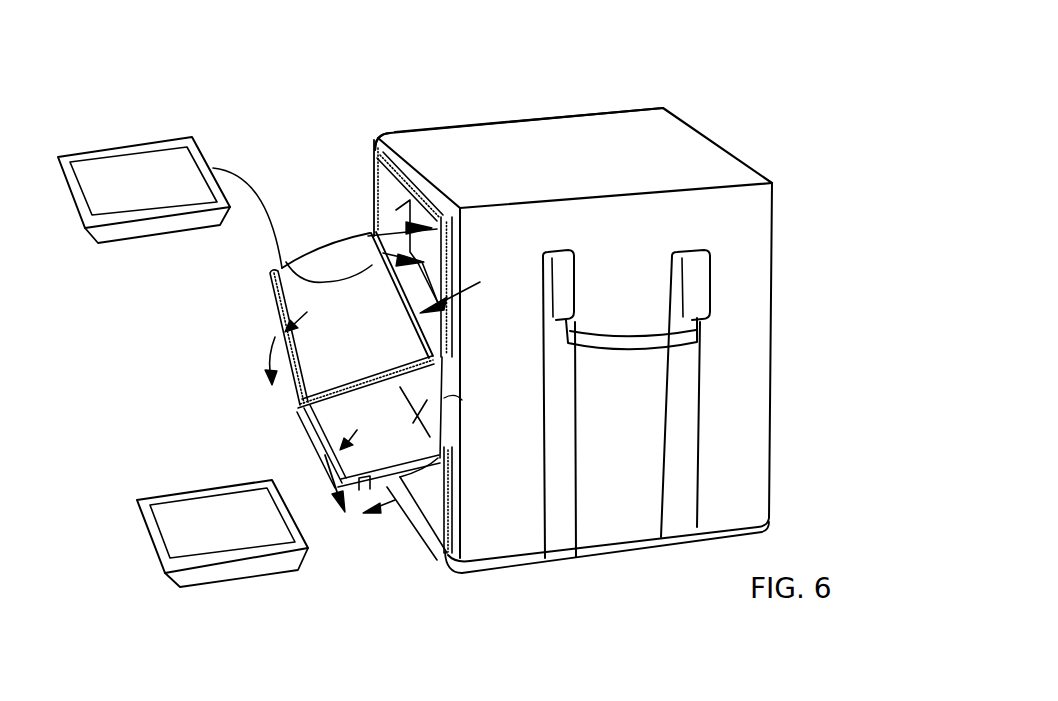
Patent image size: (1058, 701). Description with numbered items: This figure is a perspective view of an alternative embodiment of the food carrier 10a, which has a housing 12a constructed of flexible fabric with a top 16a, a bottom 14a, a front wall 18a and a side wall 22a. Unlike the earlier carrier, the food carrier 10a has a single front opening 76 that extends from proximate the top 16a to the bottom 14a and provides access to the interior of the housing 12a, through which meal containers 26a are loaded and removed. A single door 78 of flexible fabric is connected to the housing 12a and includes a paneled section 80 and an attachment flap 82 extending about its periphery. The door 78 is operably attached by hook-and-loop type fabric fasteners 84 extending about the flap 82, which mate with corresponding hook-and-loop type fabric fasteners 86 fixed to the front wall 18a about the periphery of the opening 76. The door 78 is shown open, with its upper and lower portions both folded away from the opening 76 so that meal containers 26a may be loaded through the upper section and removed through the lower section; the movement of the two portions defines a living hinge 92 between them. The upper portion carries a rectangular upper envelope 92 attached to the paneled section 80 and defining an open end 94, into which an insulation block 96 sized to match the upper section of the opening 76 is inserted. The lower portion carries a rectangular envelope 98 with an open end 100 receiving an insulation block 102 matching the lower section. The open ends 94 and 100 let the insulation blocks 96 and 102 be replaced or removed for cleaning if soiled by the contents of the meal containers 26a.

The food carrier 10a is at (625, 324).
The housing 12a is at (624, 104).
The bottom 14a is at (520, 563).
The top 16a is at (532, 132).
The front wall 18a is at (400, 160).
The side wall 22a is at (743, 372).
The meal container 26a is at (100, 165).
The front opening 76 is at (369, 235).
The door 78 is at (457, 348).
The paneled section 80 is at (463, 390).
The attachment flap 82 is at (294, 402).
The hook-and-loop type fabric fasteners 84 is at (349, 302).
The hook-and-loop type fabric fasteners 86 is at (413, 190).
The upper envelope 92 is at (327, 260).
The open end 94 is at (448, 296).
The insulation block 96 is at (452, 330).
The envelope 98 is at (425, 535).
The open end 100 is at (296, 453).
The insulation block 102 is at (362, 486).